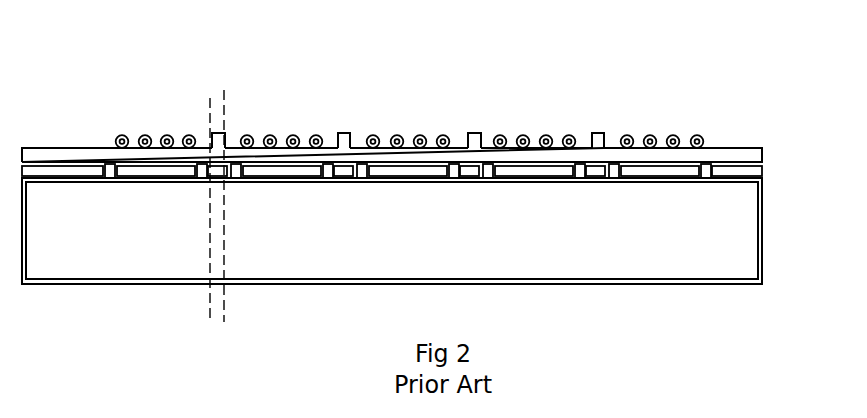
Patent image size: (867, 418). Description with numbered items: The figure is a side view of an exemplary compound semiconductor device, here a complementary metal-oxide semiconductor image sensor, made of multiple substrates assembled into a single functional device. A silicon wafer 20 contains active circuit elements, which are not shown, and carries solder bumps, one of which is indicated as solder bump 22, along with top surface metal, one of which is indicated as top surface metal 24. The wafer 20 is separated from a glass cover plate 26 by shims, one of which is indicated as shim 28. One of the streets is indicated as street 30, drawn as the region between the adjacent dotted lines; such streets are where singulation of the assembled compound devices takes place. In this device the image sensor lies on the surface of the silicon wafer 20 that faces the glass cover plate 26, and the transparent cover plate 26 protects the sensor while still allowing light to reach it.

The silicon wafer 20 is at (731, 146).
The solder bump 22 is at (696, 133).
The top surface metal 24 is at (474, 130).
The glass cover plate 26 is at (763, 215).
The shim 28 is at (764, 165).
The street 30 is at (211, 97).